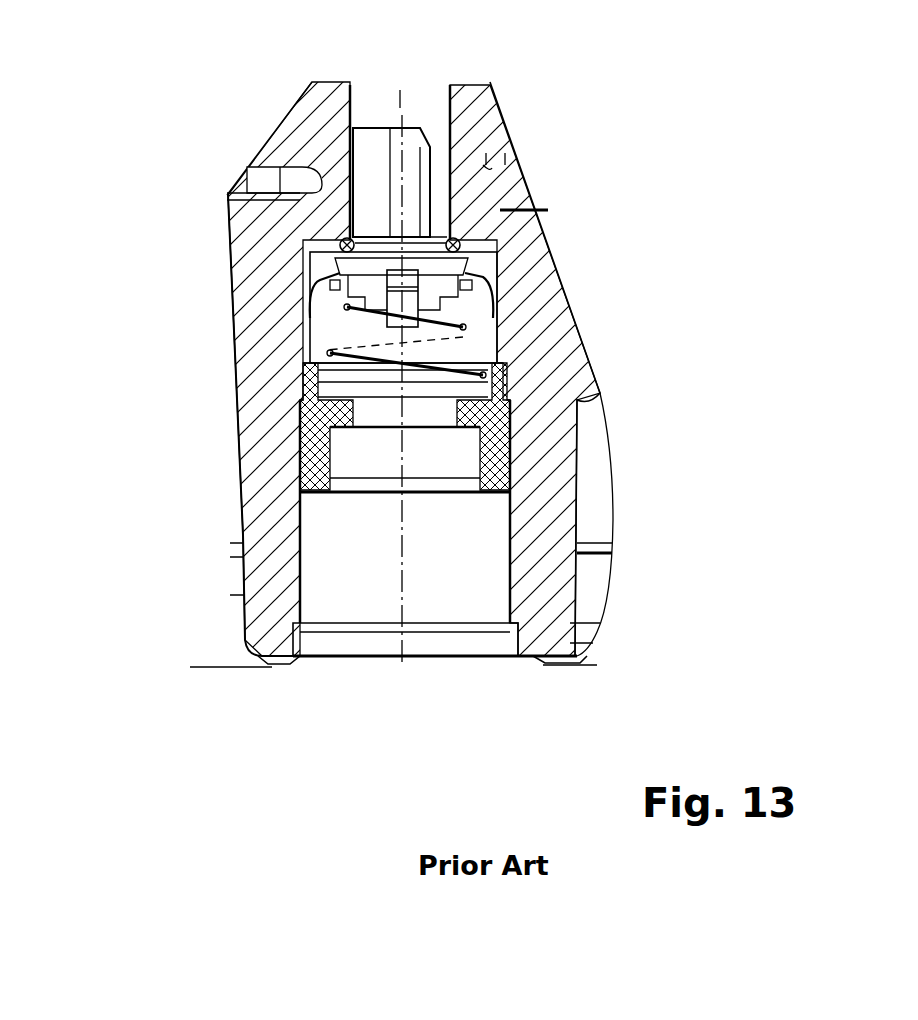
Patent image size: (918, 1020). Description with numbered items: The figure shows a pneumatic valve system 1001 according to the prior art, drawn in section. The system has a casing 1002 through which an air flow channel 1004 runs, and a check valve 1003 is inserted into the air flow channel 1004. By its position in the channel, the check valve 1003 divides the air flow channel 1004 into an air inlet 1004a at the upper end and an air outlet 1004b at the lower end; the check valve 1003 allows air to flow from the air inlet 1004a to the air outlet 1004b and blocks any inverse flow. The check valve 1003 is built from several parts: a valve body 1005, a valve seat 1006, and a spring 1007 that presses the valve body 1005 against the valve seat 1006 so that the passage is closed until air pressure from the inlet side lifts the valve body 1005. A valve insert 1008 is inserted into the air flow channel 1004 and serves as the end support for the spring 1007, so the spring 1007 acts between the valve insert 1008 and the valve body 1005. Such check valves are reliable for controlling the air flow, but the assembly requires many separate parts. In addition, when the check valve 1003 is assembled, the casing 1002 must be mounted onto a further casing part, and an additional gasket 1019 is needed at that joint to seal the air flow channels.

The pneumatic valve system 1001 is at (183, 738).
The casing 1002 is at (250, 468).
The check valve 1003 is at (307, 297).
The air flow channel 1004 is at (310, 252).
The air inlet 1004a is at (430, 97).
The air outlet 1004b is at (530, 657).
The valve body 1005 is at (413, 200).
The valve seat 1006 is at (460, 240).
The spring 1007 is at (470, 318).
The valve insert 1008 is at (513, 393).
The gasket 1019 is at (277, 660).